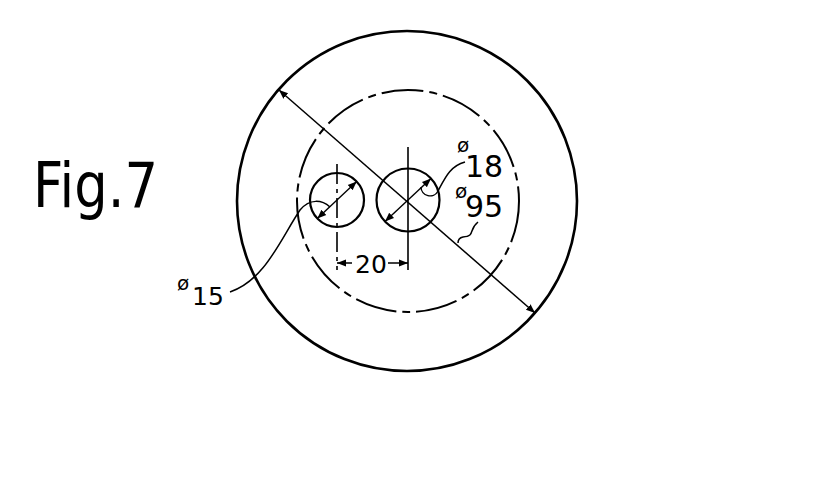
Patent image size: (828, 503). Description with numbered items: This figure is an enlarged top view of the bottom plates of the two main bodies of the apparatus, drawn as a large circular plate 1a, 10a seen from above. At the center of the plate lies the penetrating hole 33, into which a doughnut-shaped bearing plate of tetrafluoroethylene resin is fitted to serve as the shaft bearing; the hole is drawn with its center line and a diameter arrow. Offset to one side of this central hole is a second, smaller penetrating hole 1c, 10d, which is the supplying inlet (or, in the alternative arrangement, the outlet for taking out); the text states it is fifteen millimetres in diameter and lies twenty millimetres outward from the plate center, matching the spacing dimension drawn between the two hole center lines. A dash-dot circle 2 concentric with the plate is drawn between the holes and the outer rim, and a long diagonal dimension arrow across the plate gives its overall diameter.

The shaft member (disc body) 1a is at (473, 201).
The rotor disc 10a is at (533, 115).
The eccentric hole 1c is at (263, 173).
The eccentric hole portion 10d is at (307, 173).
The pitch circle 2 is at (518, 173).
The penetrating hole 33 is at (418, 168).